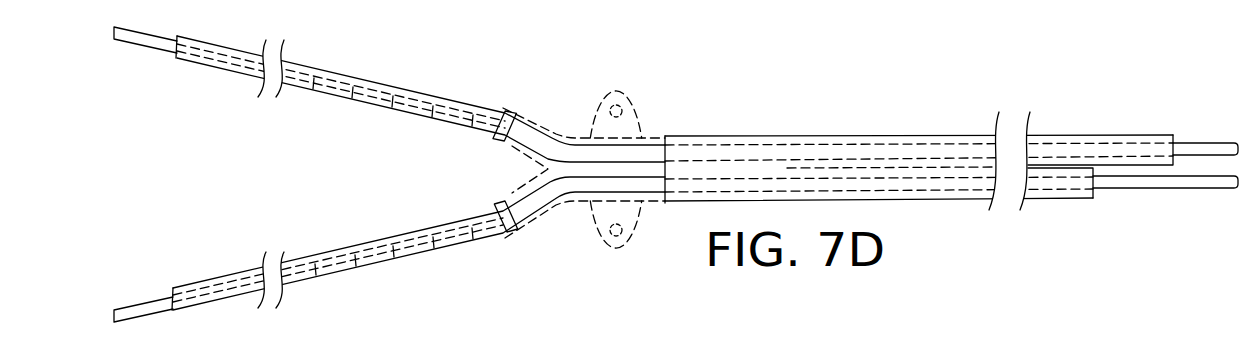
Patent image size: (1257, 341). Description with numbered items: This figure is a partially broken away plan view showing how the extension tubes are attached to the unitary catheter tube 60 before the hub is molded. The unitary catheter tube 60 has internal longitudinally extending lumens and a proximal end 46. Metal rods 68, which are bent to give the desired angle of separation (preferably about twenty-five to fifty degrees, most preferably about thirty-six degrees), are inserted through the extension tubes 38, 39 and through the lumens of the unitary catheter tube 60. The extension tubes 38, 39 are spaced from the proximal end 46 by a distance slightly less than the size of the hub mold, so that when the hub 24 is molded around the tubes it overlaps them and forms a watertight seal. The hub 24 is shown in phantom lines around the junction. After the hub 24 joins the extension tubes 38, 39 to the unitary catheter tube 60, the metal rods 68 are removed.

The hub 24 is at (555, 133).
The extension tube 38 is at (423, 255).
The extension tube 39 is at (438, 94).
The proximal end 46 is at (666, 136).
The unitary catheter tube 60 is at (943, 202).
The metal rods 68 is at (150, 42).